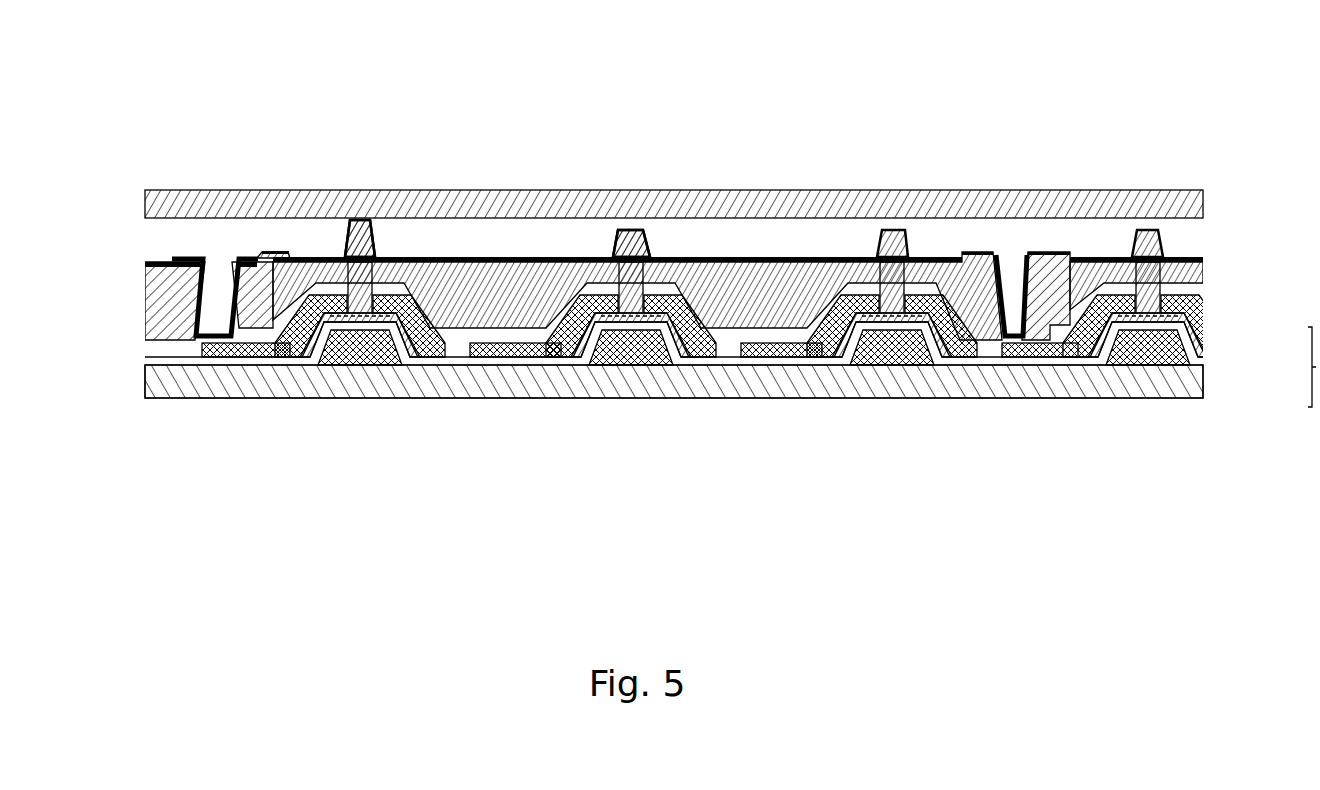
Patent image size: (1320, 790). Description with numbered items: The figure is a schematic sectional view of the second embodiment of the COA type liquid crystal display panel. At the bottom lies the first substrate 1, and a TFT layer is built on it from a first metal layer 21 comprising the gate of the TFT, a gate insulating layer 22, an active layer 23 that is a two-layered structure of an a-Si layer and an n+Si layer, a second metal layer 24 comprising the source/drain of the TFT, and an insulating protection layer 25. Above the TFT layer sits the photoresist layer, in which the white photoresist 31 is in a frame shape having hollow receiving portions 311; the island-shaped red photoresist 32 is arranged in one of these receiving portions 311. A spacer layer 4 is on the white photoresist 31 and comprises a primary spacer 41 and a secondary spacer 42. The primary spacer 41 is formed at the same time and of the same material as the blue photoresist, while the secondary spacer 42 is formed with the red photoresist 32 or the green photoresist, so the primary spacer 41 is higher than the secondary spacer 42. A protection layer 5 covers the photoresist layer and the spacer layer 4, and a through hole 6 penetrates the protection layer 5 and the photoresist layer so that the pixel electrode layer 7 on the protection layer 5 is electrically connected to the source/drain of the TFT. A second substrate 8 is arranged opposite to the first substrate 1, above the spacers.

The first substrate 1 is at (417, 372).
The spacer layer 4 is at (345, 59).
The primary spacer 41 is at (359, 221).
The secondary spacer 42 is at (615, 231).
The protection layer 5 is at (1203, 260).
The through hole 6 is at (1025, 297).
The pixel electrode layer 7 is at (185, 260).
The second substrate 8 is at (826, 190).
The first metal layer 21 is at (1187, 377).
The gate insulating layer 22 is at (1187, 357).
The active layer 23 is at (1185, 343).
The second metal layer 24 is at (1190, 307).
The insulating protection layer 25 is at (1183, 291).
The white photoresist 31 is at (1062, 300).
The receiving portion 311 is at (265, 300).
The red photoresist 32 is at (178, 303).